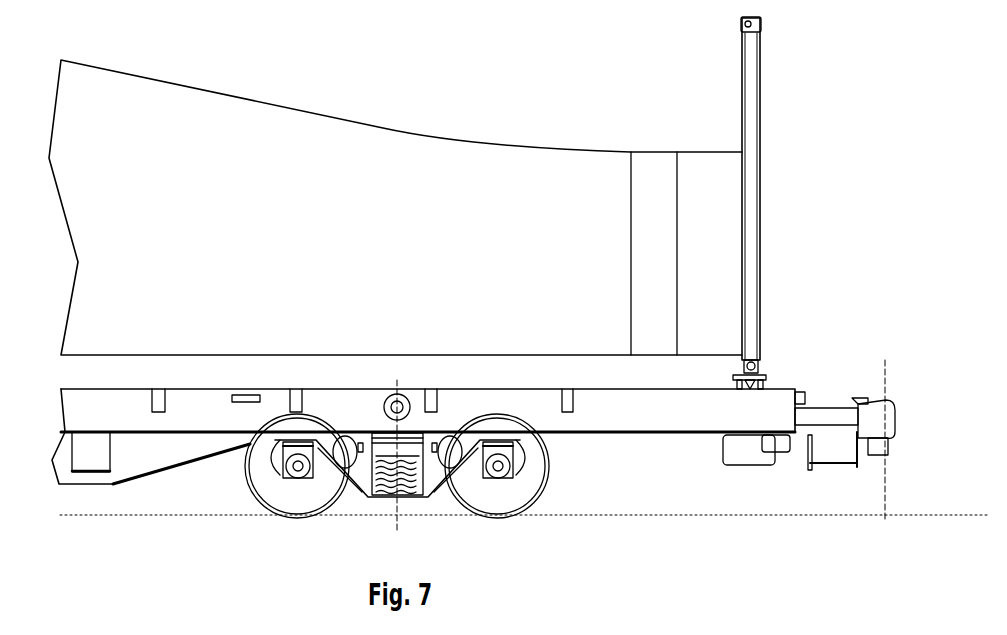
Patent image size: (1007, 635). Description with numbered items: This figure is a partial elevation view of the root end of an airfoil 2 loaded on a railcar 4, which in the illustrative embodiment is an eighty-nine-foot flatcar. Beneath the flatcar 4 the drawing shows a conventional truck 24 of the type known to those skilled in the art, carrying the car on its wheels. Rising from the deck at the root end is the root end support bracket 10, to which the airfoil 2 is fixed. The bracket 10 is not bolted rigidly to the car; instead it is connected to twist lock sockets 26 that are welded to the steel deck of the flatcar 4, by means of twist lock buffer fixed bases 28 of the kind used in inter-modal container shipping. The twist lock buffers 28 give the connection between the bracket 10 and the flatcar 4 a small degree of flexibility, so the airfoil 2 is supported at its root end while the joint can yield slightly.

The load (body / container) 2 is at (383, 128).
The railcar 4 is at (79, 389).
The root end bracket 10 is at (760, 142).
The truck 24 is at (428, 500).
The twist lock socket 26 is at (768, 383).
The twist lock buffer fixed base 28 is at (763, 362).